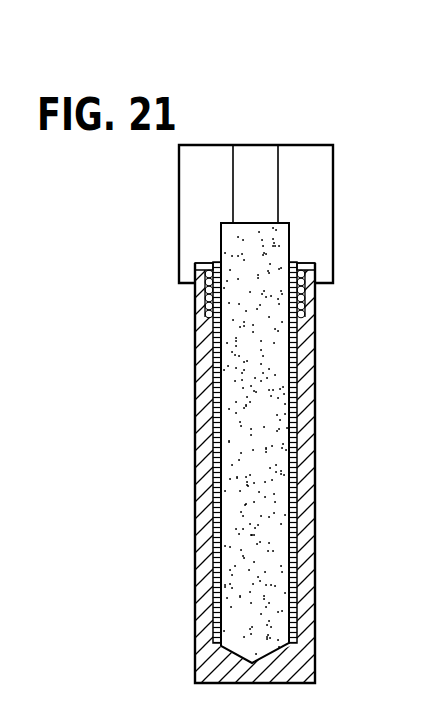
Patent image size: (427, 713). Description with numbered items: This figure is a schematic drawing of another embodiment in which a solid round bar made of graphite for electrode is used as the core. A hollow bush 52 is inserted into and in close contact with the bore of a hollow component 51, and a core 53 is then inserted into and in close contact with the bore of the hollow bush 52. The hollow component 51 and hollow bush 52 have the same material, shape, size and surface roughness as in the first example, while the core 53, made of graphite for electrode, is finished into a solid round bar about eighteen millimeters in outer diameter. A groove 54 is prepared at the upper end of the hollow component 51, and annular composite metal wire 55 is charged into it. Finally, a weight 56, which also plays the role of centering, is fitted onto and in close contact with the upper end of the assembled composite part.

The hollow component 51 is at (302, 609).
The hollow bush 52 is at (293, 531).
The core 53 is at (272, 462).
The groove 54 is at (318, 274).
The annular composite metal wire 55 is at (306, 305).
The weight 56 is at (320, 209).